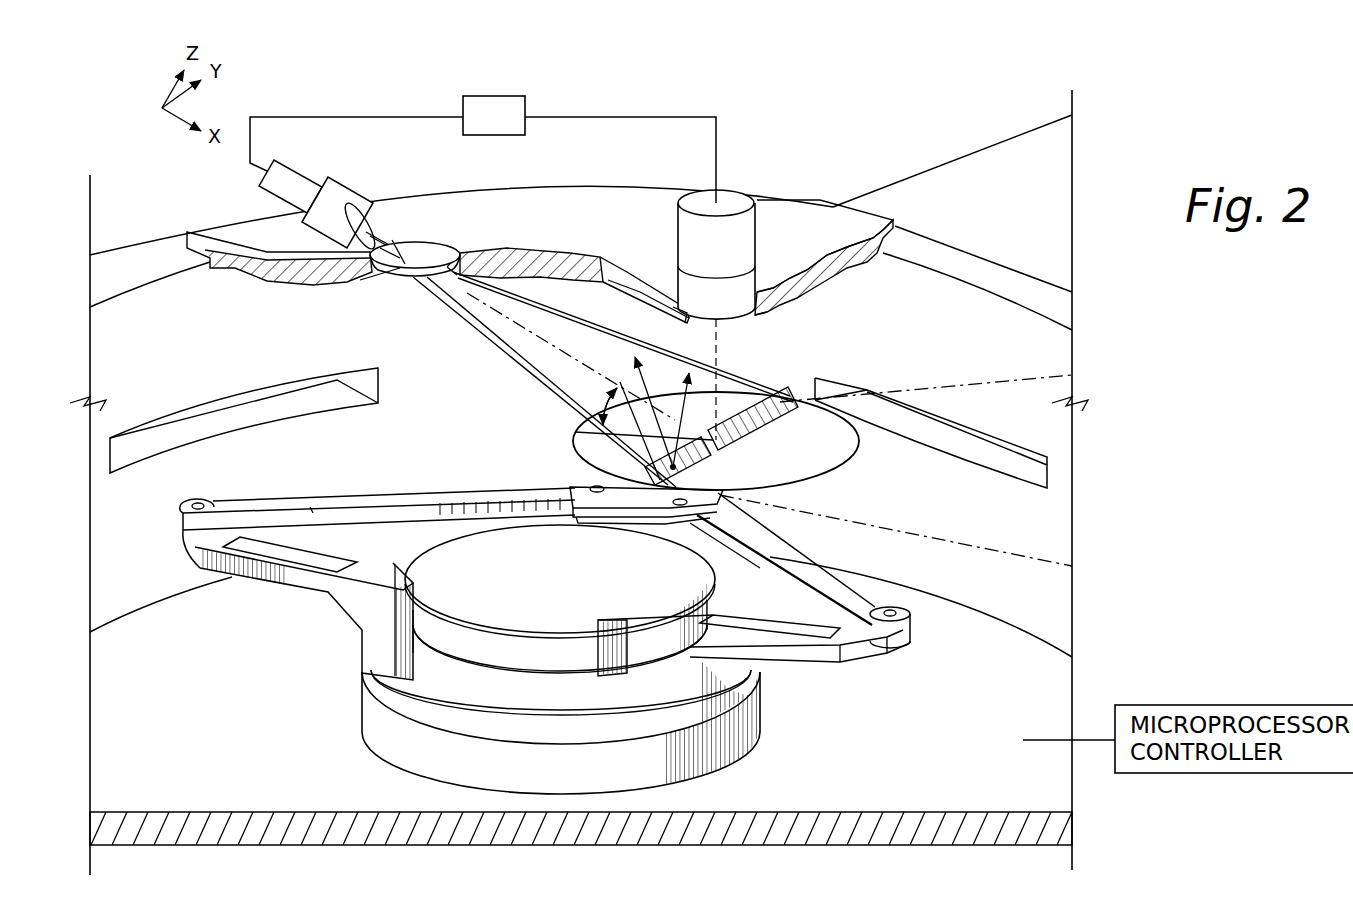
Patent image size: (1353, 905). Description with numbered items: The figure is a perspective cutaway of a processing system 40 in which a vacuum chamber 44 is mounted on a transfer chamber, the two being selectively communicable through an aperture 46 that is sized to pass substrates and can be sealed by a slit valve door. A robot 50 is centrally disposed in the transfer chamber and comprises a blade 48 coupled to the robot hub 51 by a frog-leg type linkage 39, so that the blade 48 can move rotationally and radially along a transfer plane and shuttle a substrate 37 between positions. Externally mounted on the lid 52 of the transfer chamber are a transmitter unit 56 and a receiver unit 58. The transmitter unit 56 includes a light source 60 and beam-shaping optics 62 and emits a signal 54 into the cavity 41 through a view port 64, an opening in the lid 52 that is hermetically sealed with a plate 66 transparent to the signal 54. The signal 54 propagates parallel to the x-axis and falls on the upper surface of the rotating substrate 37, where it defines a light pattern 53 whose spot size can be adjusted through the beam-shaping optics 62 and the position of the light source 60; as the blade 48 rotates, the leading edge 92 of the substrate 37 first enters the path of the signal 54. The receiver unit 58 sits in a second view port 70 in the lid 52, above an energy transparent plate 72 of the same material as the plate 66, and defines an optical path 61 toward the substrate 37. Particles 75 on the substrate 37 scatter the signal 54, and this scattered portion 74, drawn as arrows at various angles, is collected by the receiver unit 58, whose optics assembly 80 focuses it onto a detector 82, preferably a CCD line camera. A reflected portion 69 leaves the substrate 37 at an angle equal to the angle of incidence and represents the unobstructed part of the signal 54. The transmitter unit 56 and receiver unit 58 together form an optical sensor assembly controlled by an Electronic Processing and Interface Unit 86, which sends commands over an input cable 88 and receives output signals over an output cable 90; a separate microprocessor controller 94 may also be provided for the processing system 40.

The substrate 37 is at (737, 433).
The frog-leg type linkage 39 is at (800, 665).
The processing system 40 is at (822, 130).
The cavity 41 is at (958, 722).
The vacuum chamber 44 is at (897, 183).
The aperture 46 is at (316, 408).
The blade 48 is at (622, 524).
The robot 50 is at (290, 745).
The robot hub 51 is at (550, 582).
The lid 52 is at (268, 282).
The light pattern 53 is at (755, 423).
The signal 54 is at (520, 380).
The transmitter unit 56 is at (361, 187).
The receiver unit 58 is at (698, 254).
The light source 60 is at (303, 168).
The optical path 61 is at (722, 348).
The beam-shaping optics 62 is at (345, 191).
The view port 64 is at (385, 280).
The plate 66 is at (434, 272).
The reflected portion 69 is at (1028, 377).
The view port 70 is at (694, 329).
The energy transparent plate 72 is at (745, 312).
The scattered portion 74 is at (640, 386).
The particles 75 is at (695, 467).
The optics assembly 80 is at (727, 283).
The detector 82 is at (682, 245).
The Electronic Processing and Interface Unit 86 is at (505, 96).
The input cable 88 is at (383, 116).
The output cable 90 is at (622, 116).
The leading edge 92 is at (572, 432).
The disk edge 94 is at (858, 462).